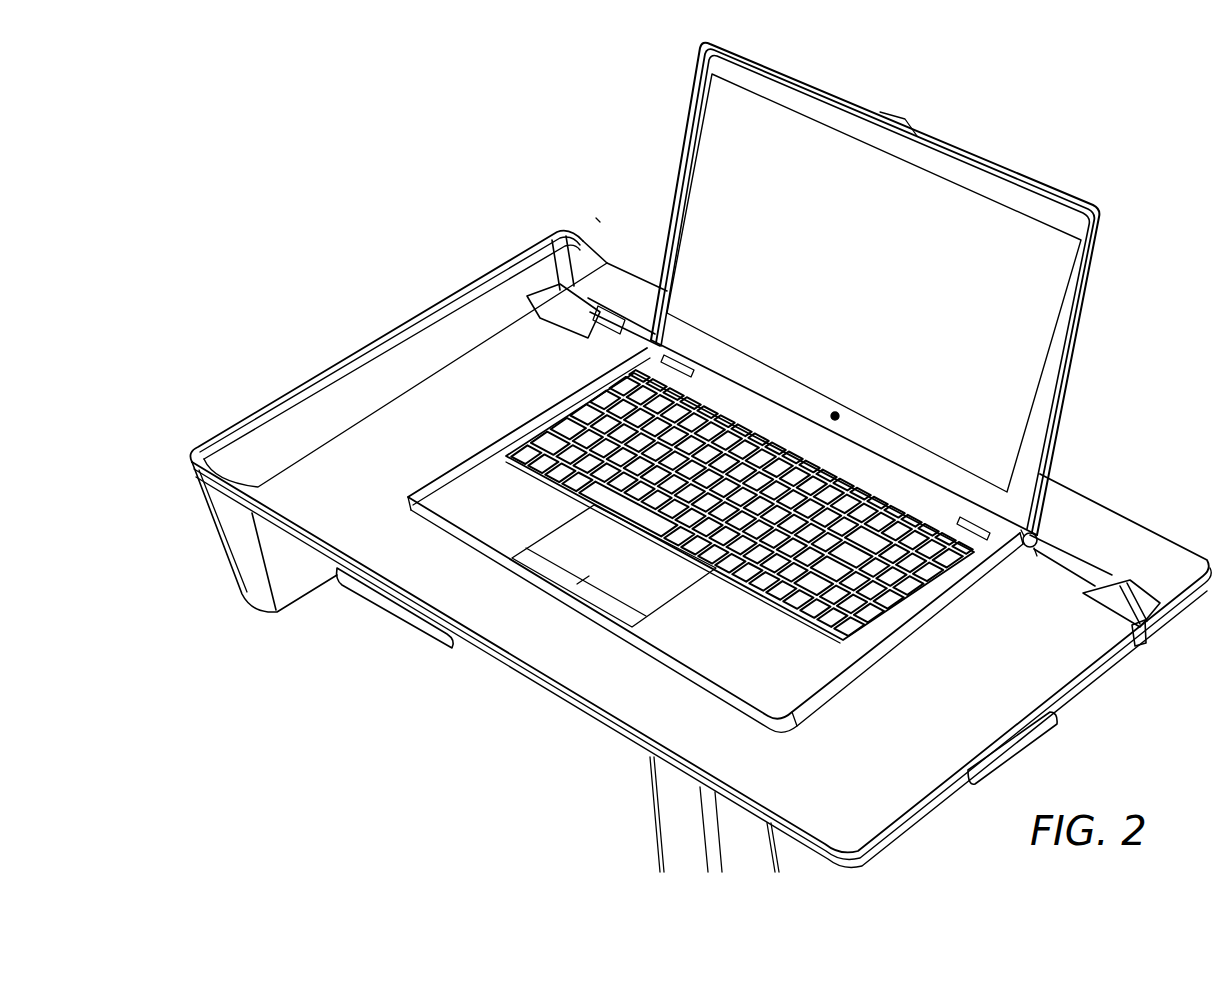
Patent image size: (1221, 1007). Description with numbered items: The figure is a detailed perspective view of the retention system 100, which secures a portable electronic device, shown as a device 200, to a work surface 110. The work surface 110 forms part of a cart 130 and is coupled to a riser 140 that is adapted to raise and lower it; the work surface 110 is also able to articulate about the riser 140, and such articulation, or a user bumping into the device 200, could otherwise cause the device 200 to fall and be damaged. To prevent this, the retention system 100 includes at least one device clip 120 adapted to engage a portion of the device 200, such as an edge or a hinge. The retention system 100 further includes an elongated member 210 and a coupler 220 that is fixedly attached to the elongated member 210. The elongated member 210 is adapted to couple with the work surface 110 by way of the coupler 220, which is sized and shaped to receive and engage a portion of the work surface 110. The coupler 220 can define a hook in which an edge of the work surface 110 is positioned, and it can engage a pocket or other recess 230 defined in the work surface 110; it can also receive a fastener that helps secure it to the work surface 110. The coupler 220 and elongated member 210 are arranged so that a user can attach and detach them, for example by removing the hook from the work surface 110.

The retention system 100 is at (620, 292).
The work surface 110 is at (888, 761).
The device clip 120 is at (1036, 531).
The cart 130 is at (367, 673).
The riser 140 is at (667, 805).
The device 200 is at (953, 164).
The elongated member 210 is at (1068, 569).
The coupler 220 is at (1160, 623).
The recess 230 is at (433, 335).